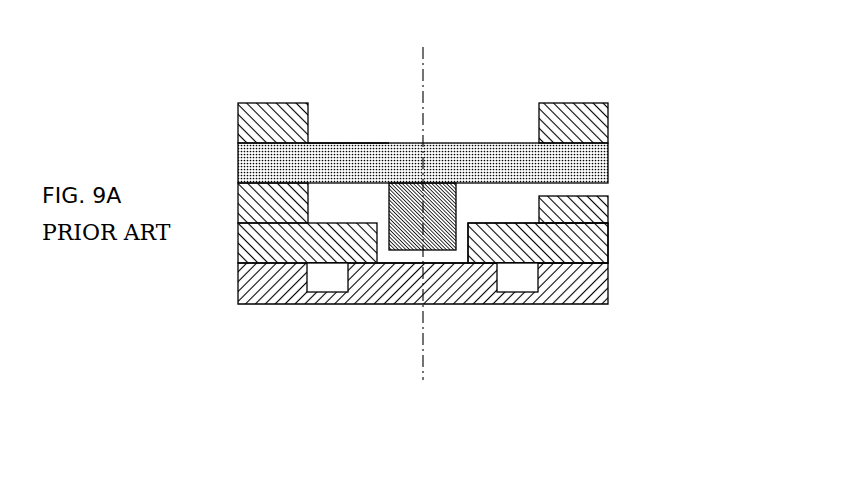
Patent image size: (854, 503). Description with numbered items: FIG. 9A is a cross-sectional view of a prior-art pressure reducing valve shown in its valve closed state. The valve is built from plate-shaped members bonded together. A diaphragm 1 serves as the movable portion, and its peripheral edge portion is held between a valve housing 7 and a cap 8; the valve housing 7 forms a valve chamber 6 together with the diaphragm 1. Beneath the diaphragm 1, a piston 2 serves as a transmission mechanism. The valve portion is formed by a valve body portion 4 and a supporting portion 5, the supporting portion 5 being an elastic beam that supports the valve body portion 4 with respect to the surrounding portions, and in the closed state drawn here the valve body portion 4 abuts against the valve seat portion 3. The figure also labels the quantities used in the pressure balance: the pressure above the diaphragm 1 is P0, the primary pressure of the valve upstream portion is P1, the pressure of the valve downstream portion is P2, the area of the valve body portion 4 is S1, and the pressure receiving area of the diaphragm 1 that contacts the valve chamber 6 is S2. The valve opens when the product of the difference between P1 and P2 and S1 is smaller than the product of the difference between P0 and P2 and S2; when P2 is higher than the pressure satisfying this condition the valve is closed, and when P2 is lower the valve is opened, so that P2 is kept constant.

The diaphragm 1 is at (512, 158).
The piston 2 is at (438, 198).
The valve seat portion 3 is at (485, 263).
The valve body portion 4 is at (460, 295).
The supporting portion 5 is at (318, 295).
The valve chamber 6 is at (325, 205).
The valve housing 7 is at (253, 205).
The cap 8 is at (258, 127).
The area of the valve body portion S1 is at (407, 291).
The pressure receiving area S2 is at (396, 160).
The pressure of the upper portion of the diaphragm P0 is at (492, 127).
The primary pressure P1 is at (422, 232).
The pressure of the valve downstream portion P2 is at (514, 199).